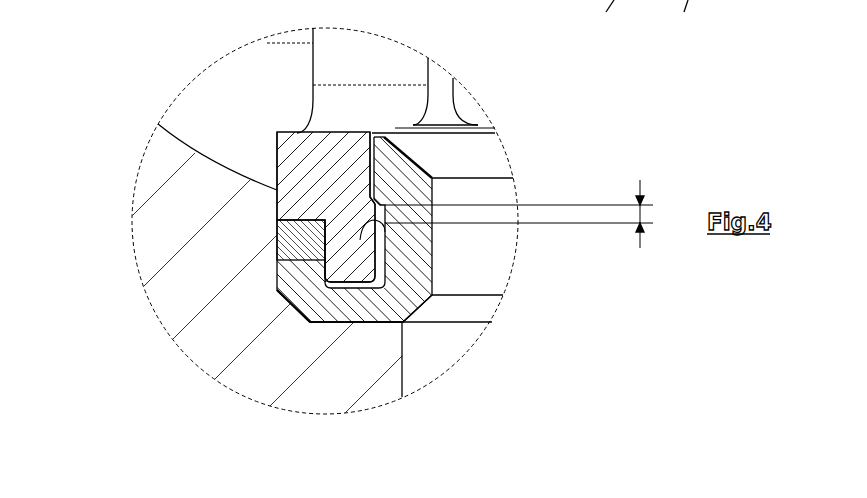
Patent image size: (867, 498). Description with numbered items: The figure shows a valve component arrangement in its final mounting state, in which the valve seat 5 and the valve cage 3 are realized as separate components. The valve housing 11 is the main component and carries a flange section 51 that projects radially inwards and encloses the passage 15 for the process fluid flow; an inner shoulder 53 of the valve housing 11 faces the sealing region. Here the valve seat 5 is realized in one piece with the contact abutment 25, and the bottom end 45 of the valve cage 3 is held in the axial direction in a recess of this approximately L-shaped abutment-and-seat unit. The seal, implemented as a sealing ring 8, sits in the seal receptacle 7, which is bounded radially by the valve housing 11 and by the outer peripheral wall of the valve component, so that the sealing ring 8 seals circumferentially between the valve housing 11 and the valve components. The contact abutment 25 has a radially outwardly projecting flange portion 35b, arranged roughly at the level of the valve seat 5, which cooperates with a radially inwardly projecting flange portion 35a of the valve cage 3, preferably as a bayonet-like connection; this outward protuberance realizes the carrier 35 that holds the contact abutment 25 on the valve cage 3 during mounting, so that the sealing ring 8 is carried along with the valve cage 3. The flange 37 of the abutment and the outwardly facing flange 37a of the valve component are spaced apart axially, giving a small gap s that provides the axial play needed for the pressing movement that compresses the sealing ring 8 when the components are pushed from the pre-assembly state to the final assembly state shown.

The valve cage 3 is at (293, 145).
The valve seat 5 is at (426, 160).
The seal receptacle 7 is at (277, 235).
The sealing ring 8 is at (277, 247).
The valve housing 11 is at (310, 397).
The passage 15 is at (447, 361).
The contact abutment 25 is at (333, 310).
The carrier 35 is at (397, 187).
The radially inwardly projecting flange portion 35a is at (365, 243).
The radially outwardly projecting flange portion 35b is at (395, 153).
The flange 37 is at (671, 19).
The outwardly facing flange 37a is at (589, 19).
The bottom end 45 is at (297, 217).
The flange section 51 is at (363, 397).
The shoulder 53 is at (180, 207).
The gap width s is at (641, 214).